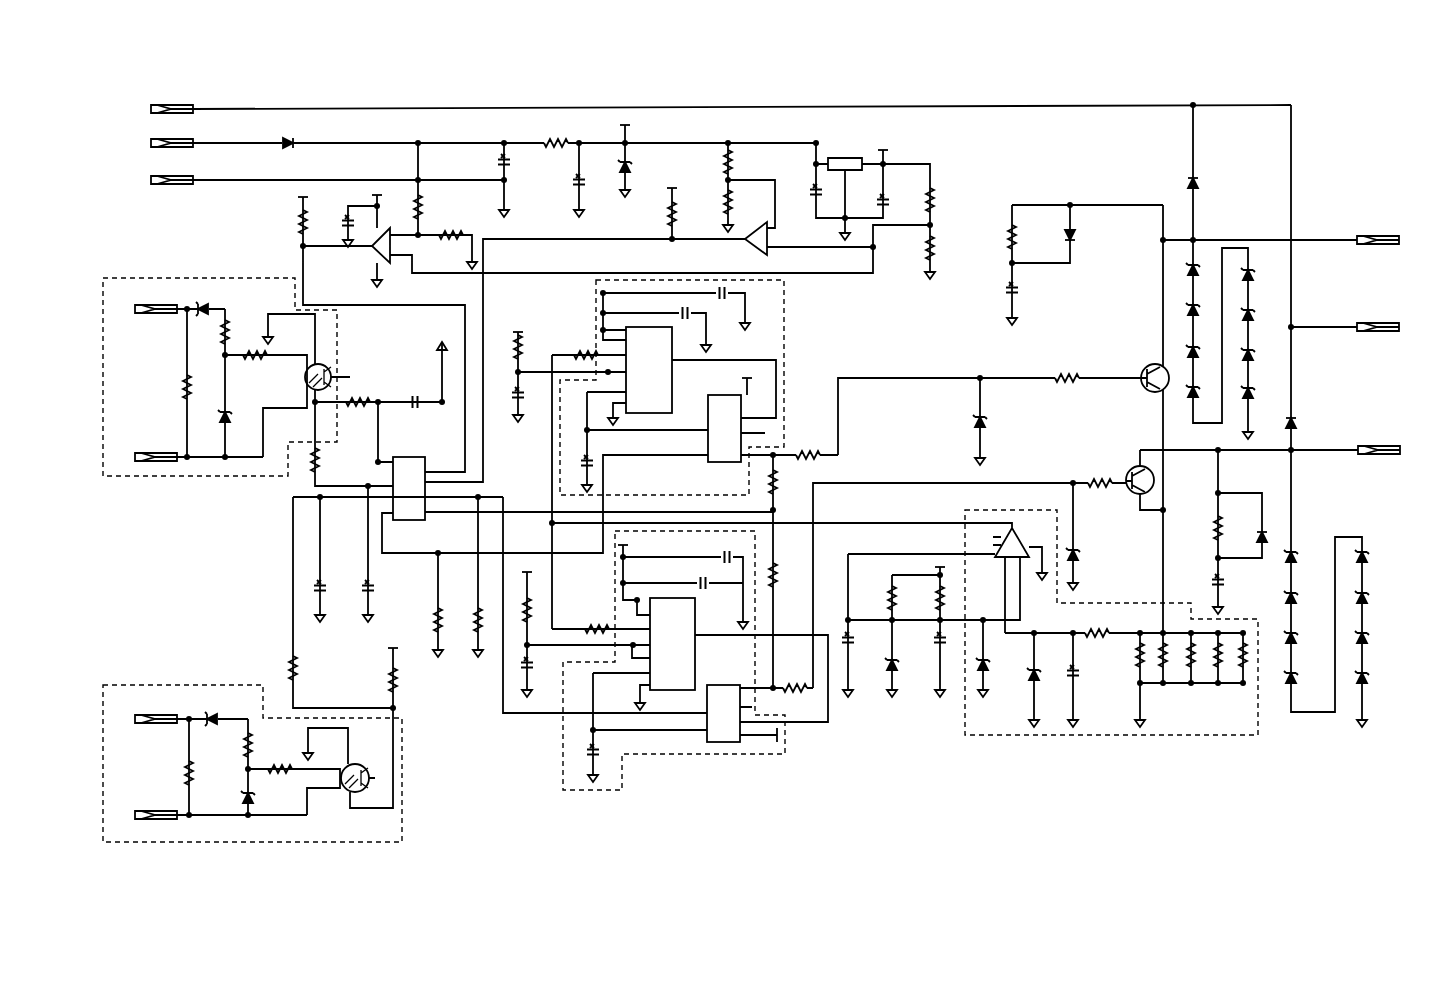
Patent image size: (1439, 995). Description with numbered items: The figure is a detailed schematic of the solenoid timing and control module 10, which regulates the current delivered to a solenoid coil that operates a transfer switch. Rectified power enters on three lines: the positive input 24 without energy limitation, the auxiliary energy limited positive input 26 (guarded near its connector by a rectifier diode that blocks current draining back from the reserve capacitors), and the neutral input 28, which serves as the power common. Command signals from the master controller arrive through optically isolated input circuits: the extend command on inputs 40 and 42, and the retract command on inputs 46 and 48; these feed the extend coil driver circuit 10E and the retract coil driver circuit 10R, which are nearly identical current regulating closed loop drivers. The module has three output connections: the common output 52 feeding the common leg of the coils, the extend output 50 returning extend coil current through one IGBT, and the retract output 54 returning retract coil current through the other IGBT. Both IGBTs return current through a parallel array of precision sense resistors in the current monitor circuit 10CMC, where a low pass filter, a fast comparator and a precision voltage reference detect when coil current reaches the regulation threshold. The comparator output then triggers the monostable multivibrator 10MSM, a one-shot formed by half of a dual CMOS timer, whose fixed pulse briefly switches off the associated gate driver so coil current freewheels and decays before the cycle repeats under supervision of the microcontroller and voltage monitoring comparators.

The control module 10 is at (971, 86).
The positive input 24 is at (704, 106).
The auxiliary energy limited positive input 26 is at (467, 140).
The neutral input 28 is at (311, 177).
The extend command input 40 is at (165, 306).
The extend command input 42 is at (184, 454).
The retract command input 46 is at (177, 716).
The retract command input 48 is at (206, 822).
The extend output connection 50 is at (1297, 237).
The common output connection 52 is at (1361, 324).
The retract output connection 54 is at (1287, 447).
The extend coil driver circuit 10E is at (227, 490).
The retract coil driver circuit 10R is at (217, 671).
The monostable multivibrator 10MSM is at (798, 353).
The current monitor circuit 10CMC is at (1128, 752).